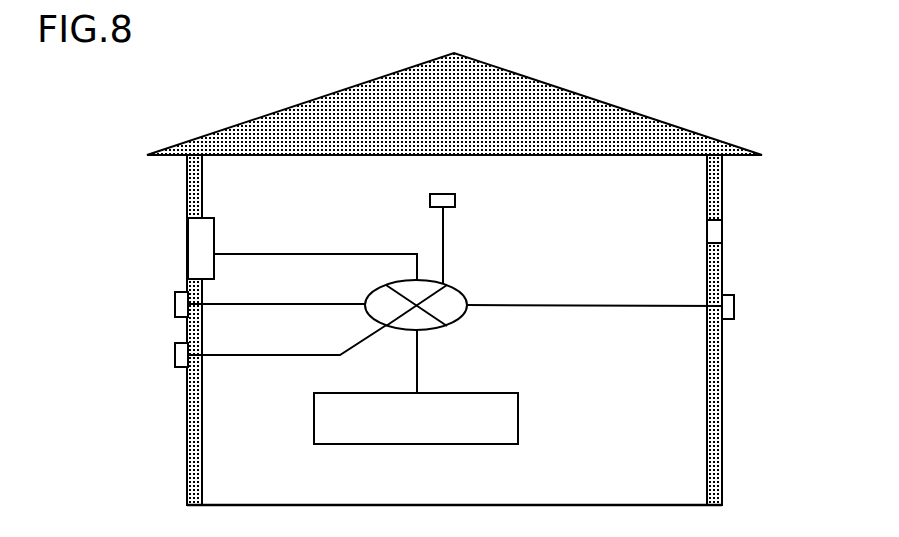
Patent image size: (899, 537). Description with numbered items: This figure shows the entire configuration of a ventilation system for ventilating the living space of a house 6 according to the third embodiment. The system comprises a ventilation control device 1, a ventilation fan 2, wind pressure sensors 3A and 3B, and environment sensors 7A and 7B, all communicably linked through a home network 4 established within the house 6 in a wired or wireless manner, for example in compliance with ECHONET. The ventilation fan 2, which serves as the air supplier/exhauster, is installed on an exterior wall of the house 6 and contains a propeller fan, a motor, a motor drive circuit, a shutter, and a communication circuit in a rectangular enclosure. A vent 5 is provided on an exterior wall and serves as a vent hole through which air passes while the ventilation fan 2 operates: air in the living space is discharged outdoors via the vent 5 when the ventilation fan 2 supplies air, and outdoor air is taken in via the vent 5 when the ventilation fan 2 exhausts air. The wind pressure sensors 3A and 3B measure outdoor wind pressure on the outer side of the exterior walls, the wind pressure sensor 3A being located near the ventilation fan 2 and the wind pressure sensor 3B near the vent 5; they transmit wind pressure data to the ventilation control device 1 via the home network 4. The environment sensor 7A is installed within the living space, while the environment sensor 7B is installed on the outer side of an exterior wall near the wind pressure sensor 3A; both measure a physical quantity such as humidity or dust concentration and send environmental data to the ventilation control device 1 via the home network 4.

The ventilation control device 1 is at (452, 393).
The ventilation fan 2 is at (214, 222).
The wind pressure sensor 3A is at (175, 296).
The wind pressure sensor 3B is at (734, 312).
The home network 4 is at (463, 287).
The vent 5 is at (723, 229).
The house 6 is at (550, 84).
The environment sensor 7A is at (455, 196).
The environment sensor 7B is at (175, 362).